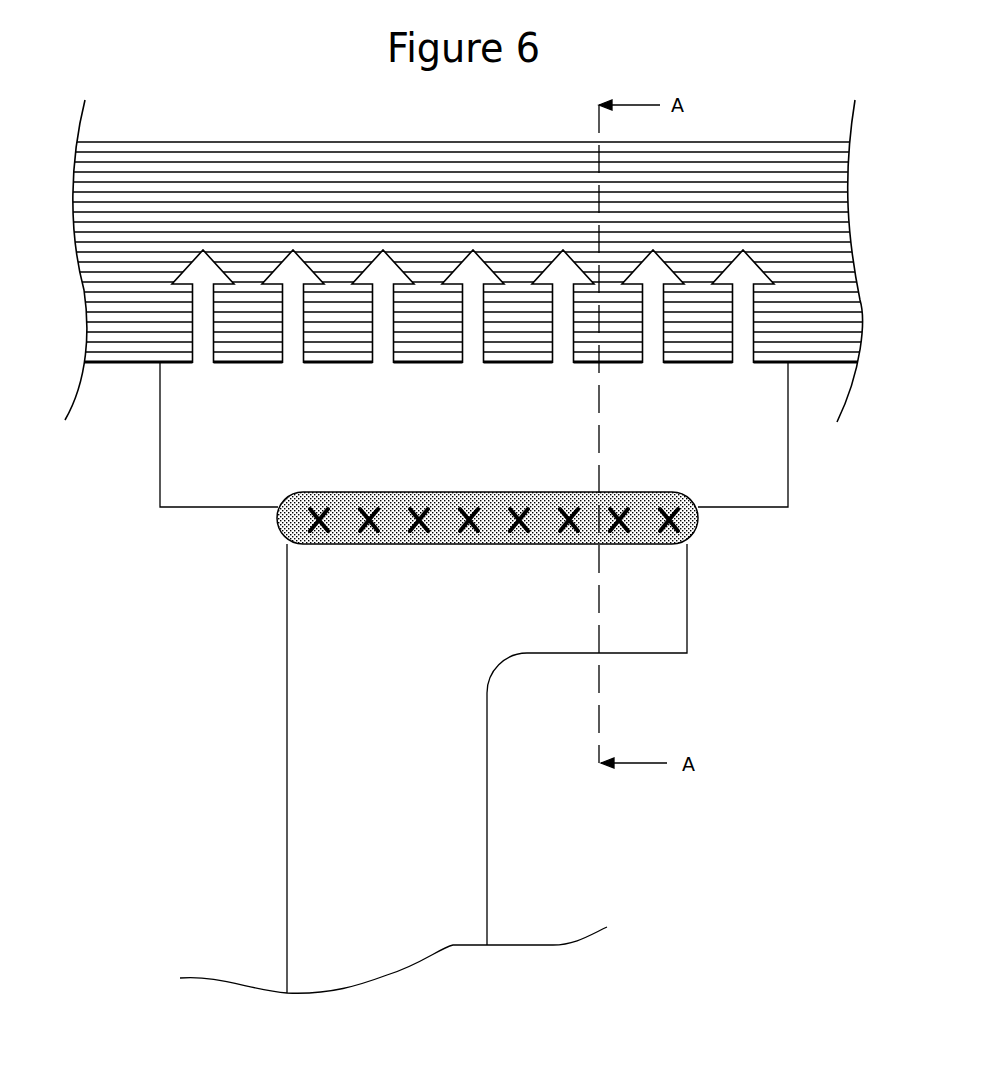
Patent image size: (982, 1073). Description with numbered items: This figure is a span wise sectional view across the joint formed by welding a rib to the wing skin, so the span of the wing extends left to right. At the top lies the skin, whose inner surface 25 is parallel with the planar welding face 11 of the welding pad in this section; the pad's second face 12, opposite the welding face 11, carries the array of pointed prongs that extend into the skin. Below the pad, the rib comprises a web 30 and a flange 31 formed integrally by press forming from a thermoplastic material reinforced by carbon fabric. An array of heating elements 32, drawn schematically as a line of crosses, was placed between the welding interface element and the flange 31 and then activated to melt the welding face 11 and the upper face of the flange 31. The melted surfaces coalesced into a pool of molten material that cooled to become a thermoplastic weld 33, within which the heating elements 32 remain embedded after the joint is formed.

The inner surface 25 is at (137, 361).
The second face 12 is at (452, 361).
The welding face 11 is at (177, 508).
The thermoplastic weld 33 is at (699, 518).
The heating elements 32 is at (310, 520).
The flange 31 is at (660, 605).
The web 30 is at (462, 775).